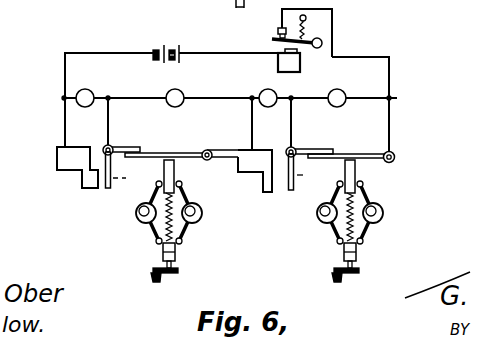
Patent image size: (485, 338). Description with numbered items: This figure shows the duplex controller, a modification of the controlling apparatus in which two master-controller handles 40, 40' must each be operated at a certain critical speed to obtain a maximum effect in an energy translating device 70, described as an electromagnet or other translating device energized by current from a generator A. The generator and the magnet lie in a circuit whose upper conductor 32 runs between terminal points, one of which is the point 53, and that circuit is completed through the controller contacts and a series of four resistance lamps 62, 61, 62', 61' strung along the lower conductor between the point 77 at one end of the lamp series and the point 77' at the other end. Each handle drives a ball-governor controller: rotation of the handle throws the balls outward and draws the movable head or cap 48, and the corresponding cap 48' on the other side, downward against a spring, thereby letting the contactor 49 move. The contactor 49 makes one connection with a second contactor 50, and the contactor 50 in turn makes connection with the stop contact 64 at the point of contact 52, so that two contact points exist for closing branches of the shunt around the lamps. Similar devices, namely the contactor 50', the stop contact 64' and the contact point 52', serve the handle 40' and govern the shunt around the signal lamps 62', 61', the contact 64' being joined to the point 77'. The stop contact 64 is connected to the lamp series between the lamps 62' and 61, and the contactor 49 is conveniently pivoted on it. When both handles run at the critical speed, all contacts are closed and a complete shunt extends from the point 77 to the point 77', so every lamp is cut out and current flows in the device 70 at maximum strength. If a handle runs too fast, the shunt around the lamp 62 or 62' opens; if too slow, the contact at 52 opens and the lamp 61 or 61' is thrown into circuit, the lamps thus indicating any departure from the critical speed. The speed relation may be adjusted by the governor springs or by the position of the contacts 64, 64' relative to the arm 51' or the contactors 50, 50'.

The generator A is at (166, 43).
The conductor 32 is at (225, 50).
The relay 70 is at (310, 62).
The circuit point 53 is at (375, 101).
The circuit point 77' is at (130, 99).
The circuit point 77 is at (324, 104).
The signal lamp 61' is at (96, 93).
The signal lamp 62' is at (187, 93).
The resistance lamp 61 is at (277, 93).
The resistance lamp 62 is at (337, 92).
The stop contact 64' is at (68, 178).
The stop contact 64 is at (252, 153).
The link 48' is at (219, 171).
The motor-circuit contactor 49 is at (186, 152).
The contactor 50' is at (135, 126).
The motor-circuit contactor 50 is at (309, 127).
The movable head or cap 48 is at (388, 171).
The contact arm 52' is at (101, 185).
The point of contact 52 is at (278, 186).
The arm 51' is at (129, 185).
The master-controller handle 40' is at (169, 229).
The master-controller handle 40 is at (350, 229).